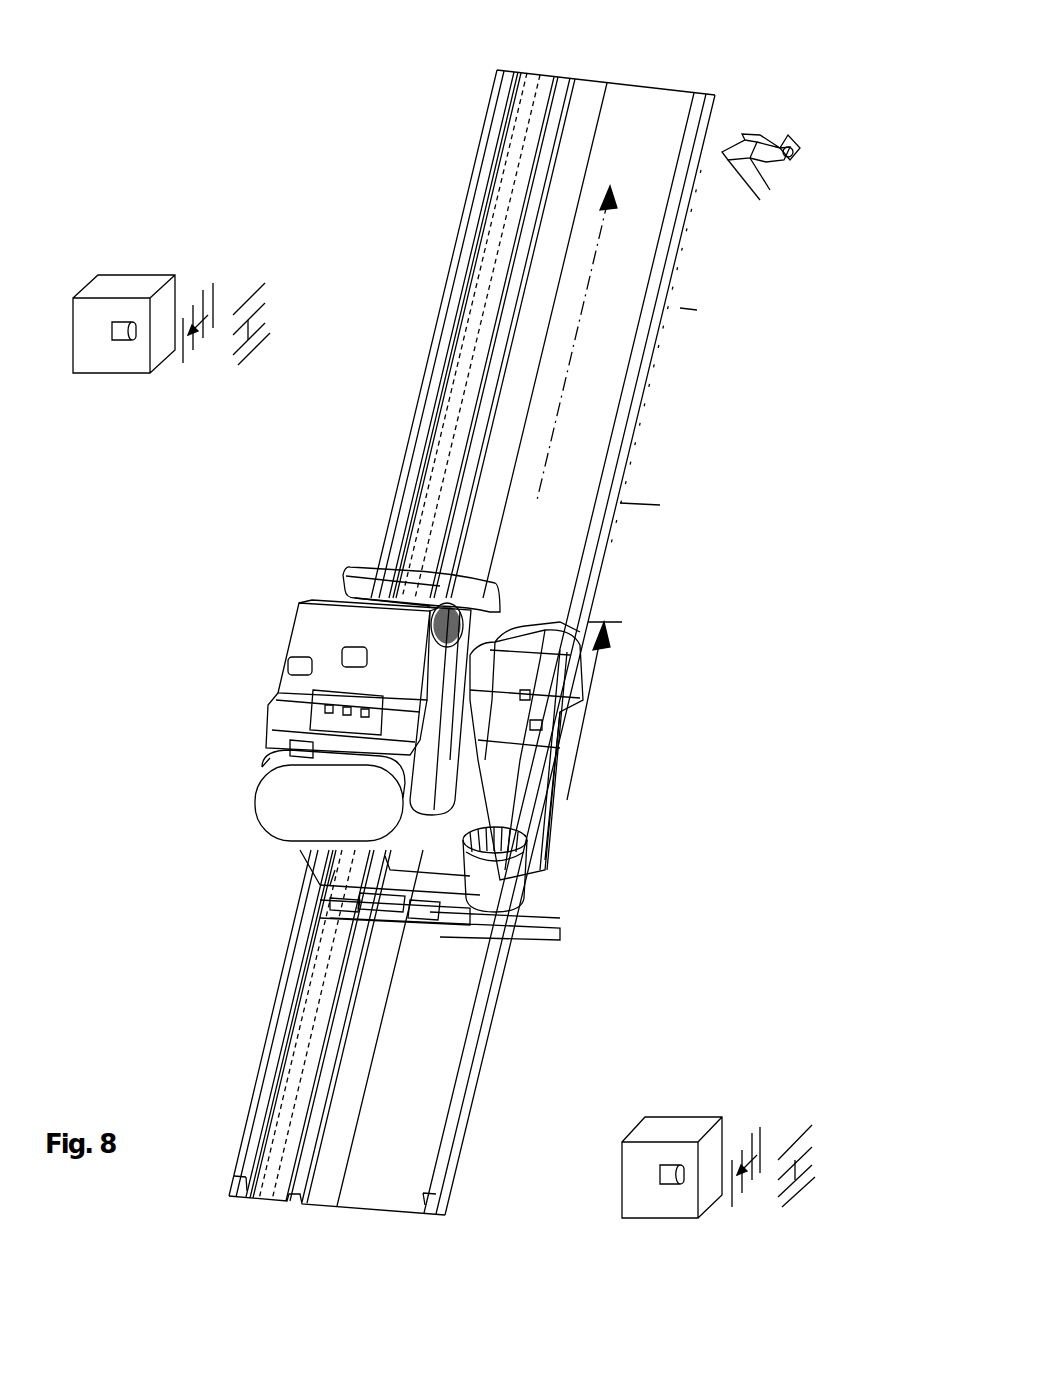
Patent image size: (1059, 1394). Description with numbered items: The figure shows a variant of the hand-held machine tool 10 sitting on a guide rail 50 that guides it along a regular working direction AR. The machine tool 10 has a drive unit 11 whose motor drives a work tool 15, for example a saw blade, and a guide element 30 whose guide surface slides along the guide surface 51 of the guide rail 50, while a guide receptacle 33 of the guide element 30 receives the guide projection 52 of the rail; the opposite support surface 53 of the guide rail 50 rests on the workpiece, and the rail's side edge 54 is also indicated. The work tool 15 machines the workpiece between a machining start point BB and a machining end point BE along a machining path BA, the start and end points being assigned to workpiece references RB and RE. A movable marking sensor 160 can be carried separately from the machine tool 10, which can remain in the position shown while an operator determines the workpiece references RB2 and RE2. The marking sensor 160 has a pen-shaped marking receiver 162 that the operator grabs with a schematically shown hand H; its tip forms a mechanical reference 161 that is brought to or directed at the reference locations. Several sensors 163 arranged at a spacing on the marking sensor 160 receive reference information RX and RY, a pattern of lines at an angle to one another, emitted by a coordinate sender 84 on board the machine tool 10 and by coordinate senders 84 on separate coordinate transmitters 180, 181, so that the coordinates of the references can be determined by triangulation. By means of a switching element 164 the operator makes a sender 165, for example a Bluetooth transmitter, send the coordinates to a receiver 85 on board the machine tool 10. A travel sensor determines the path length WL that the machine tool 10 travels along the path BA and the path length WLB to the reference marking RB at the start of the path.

The machine tool 10 is at (426, 730).
The drive unit 11 is at (370, 572).
The work tool 15 is at (548, 838).
The guide element 30 is at (518, 926).
The guide receptacle 33 is at (345, 920).
The guide rail 50 is at (490, 113).
The guide surface 51 is at (622, 103).
The guide projection 52 is at (556, 80).
The support surface 53 is at (390, 1222).
The rail side edge 54 is at (490, 996).
The coordinate sender 84 is at (341, 656).
The receiver 85 is at (286, 666).
The marking sensor 160 is at (806, 144).
The mechanical reference 161 is at (768, 204).
The marking receiver 162 is at (791, 187).
The sensor 163 is at (785, 142).
The switching element 164 is at (758, 138).
The sender 165 is at (794, 152).
The coordinate transmitter 180 is at (690, 1120).
The coordinate transmitter 181 is at (140, 290).
The hand H is at (747, 142).
The regular working direction AR is at (577, 343).
The workpiece reference RE is at (697, 310).
The workpiece reference RE2 is at (718, 162).
The machining end point BE is at (697, 310).
The machining path BA is at (640, 432).
The workpiece reference RB is at (622, 622).
The workpiece reference RB2 is at (648, 505).
The machining start point BB is at (622, 622).
The path length WL is at (597, 690).
The path length WLB is at (583, 742).
The reference information RX is at (200, 290).
The reference information RY is at (243, 350).